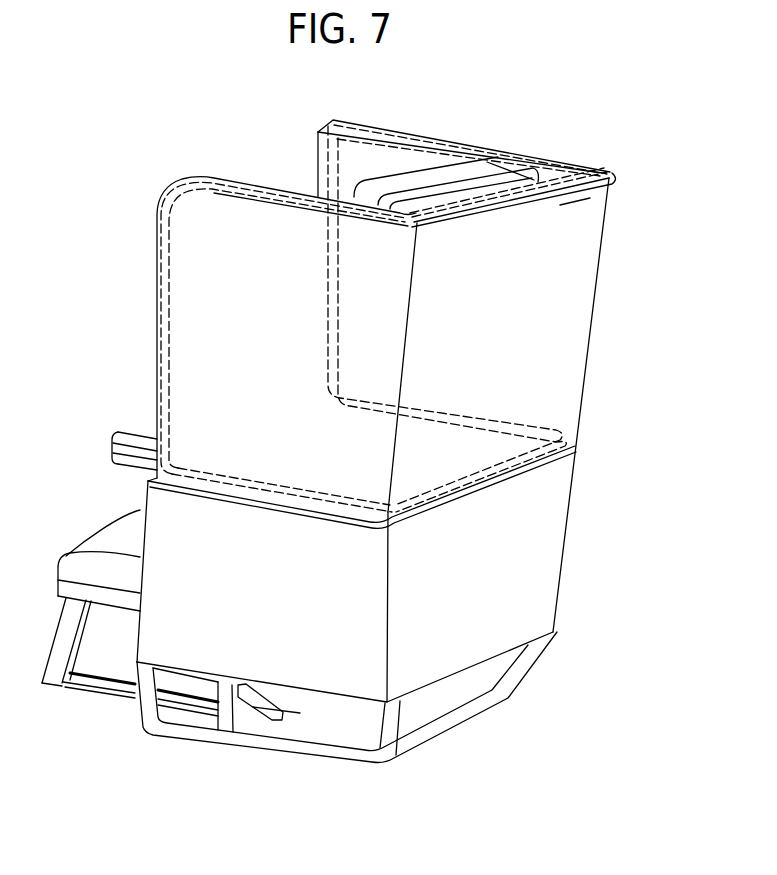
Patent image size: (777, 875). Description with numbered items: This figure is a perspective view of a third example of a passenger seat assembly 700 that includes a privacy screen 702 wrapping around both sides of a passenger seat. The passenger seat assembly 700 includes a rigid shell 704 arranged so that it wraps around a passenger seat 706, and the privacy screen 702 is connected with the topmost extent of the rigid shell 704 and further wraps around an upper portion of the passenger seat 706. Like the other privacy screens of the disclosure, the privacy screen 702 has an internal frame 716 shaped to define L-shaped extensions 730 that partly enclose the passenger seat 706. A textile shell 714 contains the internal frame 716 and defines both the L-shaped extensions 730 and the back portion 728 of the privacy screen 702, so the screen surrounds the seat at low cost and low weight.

The passenger seat assembly 700 is at (531, 97).
The privacy screen 702 is at (626, 337).
The rigid shell 704 is at (609, 579).
The passenger seat 706 is at (507, 165).
The textile shell 714 is at (593, 243).
The internal frame 716 is at (572, 207).
The back portion 728 is at (522, 318).
The L-shaped extensions 730 is at (268, 186).